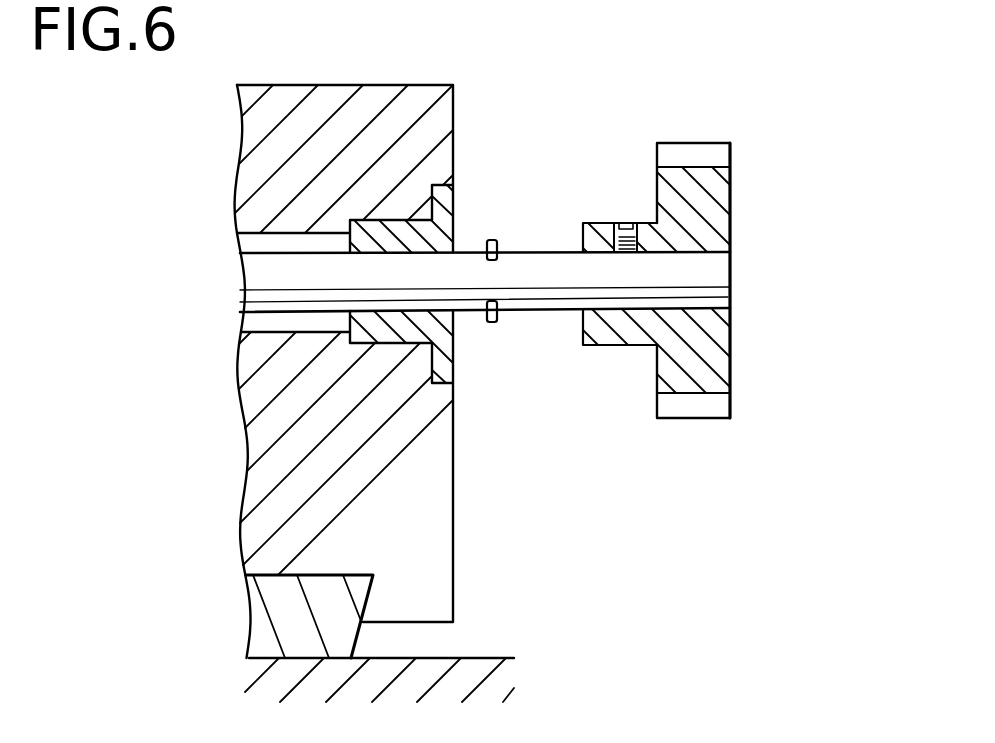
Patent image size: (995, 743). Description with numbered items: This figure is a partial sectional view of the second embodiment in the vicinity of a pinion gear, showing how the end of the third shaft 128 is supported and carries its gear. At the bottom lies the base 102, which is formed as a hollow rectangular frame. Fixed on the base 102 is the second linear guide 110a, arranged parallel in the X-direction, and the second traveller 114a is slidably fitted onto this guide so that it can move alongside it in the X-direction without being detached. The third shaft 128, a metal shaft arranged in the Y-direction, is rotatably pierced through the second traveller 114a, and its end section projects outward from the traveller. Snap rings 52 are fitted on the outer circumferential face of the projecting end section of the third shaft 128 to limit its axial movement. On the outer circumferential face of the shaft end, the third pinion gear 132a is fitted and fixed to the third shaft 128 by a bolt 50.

The bolt 50 is at (631, 222).
The retaining clips 52 is at (490, 240).
The base 102 is at (483, 657).
The second linear guide 110a is at (273, 622).
The second traveller 114a is at (253, 468).
The third shaft 128 is at (255, 273).
The third pinion gear 132a is at (712, 211).